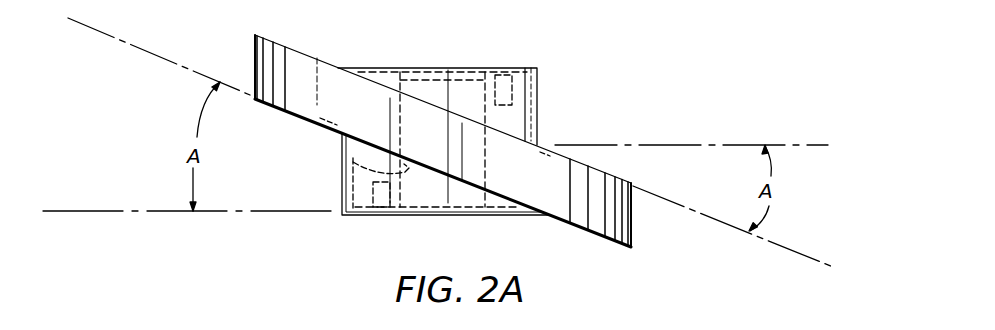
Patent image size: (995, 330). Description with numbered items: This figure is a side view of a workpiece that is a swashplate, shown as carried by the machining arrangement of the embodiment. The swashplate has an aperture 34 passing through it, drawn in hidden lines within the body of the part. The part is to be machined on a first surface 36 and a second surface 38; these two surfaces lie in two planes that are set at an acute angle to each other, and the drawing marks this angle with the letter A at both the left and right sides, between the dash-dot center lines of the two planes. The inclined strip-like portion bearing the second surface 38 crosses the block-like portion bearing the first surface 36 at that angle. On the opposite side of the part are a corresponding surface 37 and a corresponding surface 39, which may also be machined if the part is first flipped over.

The aperture 34 is at (350, 160).
The first surface 36 is at (440, 68).
The corresponding surface 37 is at (411, 216).
The second surface 38 is at (292, 47).
The corresponding surface 39 is at (600, 238).